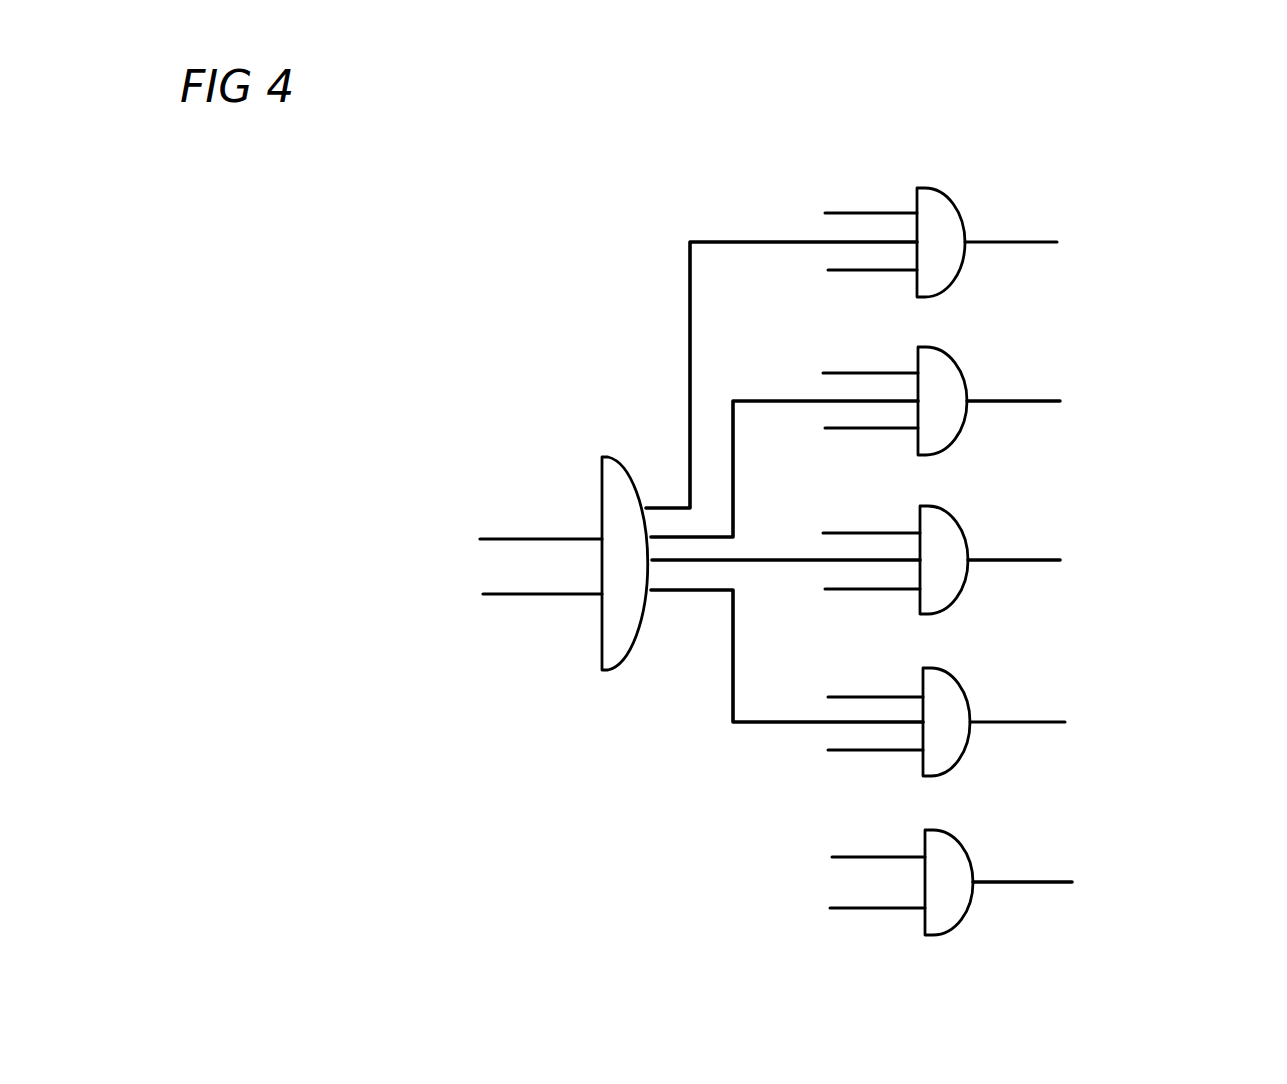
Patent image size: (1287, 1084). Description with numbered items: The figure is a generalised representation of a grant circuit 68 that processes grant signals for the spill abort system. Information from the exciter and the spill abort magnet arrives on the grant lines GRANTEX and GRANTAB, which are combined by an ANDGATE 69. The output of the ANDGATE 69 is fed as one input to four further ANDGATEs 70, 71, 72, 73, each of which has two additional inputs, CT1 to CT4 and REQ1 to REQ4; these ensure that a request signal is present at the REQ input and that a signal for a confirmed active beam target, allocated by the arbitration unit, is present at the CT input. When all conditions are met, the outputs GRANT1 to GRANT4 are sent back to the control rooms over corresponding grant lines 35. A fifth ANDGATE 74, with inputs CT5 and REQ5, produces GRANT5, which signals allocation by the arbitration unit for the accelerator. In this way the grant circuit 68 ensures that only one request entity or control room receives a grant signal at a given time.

The grant circuit 68 is at (1145, 143).
The ANDGATE 69 is at (634, 655).
The ANDGATE 70 is at (940, 289).
The ANDGATE 71 is at (950, 444).
The ANDGATE 72 is at (952, 604).
The ANDGATE 73 is at (960, 758).
The ANDGATE 74 is at (962, 905).
The grant lines 35 is at (1027, 242).